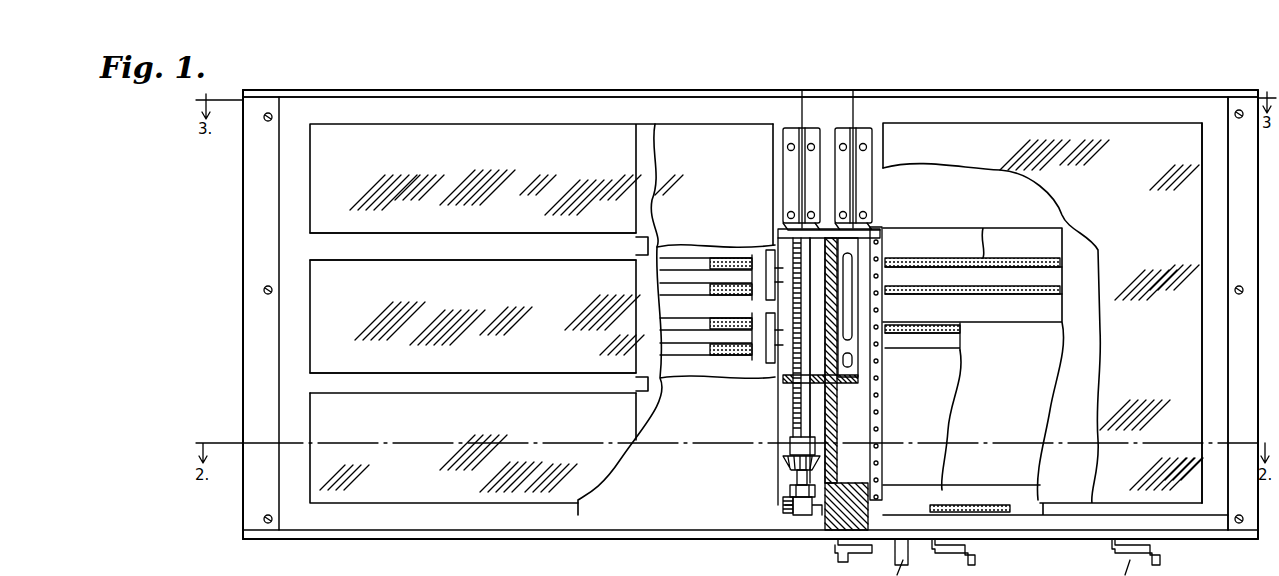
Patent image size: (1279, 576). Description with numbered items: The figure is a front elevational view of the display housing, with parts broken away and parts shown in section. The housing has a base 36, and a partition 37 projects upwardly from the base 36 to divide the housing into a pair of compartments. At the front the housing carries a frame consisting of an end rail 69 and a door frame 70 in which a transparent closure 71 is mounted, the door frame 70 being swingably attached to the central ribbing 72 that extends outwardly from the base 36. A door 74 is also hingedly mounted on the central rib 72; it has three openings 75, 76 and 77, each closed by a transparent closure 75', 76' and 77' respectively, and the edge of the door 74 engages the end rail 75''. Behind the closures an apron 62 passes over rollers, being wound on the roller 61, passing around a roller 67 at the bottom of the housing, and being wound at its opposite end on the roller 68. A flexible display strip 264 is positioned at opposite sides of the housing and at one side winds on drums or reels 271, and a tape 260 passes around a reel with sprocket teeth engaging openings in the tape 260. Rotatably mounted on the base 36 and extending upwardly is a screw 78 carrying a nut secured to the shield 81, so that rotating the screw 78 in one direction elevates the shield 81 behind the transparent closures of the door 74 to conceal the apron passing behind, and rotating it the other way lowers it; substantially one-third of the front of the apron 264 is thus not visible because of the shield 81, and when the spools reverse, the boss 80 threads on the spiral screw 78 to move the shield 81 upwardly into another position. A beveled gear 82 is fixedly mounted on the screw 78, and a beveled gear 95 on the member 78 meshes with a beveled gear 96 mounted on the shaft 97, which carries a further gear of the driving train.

The base 36 is at (636, 540).
The partition 37 is at (831, 403).
The roller 61 is at (978, 279).
The apron 62 is at (958, 388).
The roller 67 is at (998, 503).
The roller 68 is at (963, 341).
The end rail 69 is at (1232, 210).
The door frame 70 is at (1206, 302).
The transparent closure 71 is at (1137, 140).
The central ribbing 72 is at (840, 105).
The door 74 is at (468, 103).
The opening 75 is at (541, 148).
The transparent closure 75' is at (495, 139).
The end rail 75'' is at (231, 314).
The opening 76 is at (479, 233).
The transparent closure 76' is at (477, 292).
The opening 77 is at (479, 369).
The transparent closure 77' is at (473, 423).
The screw 78 is at (800, 385).
The boss 80 is at (800, 448).
The shield 81 is at (657, 412).
The beveled gear 82 is at (794, 463).
The beveled gear 95 is at (807, 525).
The beveled gear 96 is at (790, 517).
The shaft 97 is at (783, 512).
The tape 260 is at (758, 252).
The flexible display strip 264 is at (708, 160).
The drums or reels 271 is at (752, 284).